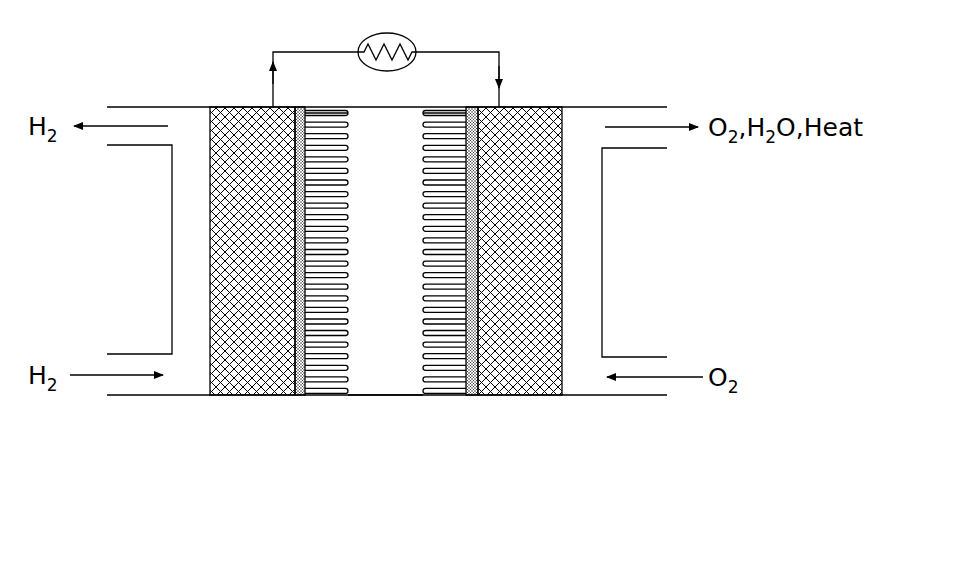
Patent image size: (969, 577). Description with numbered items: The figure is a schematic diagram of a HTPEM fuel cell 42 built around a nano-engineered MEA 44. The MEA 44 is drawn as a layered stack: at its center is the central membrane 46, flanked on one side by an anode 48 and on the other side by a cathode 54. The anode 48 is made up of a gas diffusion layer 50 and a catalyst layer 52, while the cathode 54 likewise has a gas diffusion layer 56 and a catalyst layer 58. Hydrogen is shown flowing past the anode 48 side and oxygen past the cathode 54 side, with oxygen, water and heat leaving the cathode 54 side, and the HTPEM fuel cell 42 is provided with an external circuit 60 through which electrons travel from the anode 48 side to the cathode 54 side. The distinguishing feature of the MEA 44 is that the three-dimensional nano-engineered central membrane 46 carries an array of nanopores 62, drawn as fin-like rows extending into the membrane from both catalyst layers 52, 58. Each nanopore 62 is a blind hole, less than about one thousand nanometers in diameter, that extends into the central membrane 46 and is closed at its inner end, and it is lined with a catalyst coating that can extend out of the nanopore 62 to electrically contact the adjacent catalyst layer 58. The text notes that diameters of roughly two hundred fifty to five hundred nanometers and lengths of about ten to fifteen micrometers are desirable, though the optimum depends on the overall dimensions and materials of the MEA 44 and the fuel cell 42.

The HTPEM fuel cell 42 is at (541, 63).
The nano-engineered MEA 44 is at (562, 418).
The central membrane 46 is at (387, 400).
The anode 48 is at (305, 400).
The gas diffusion layer 50 is at (248, 106).
The catalyst layer 52 is at (300, 106).
The cathode 54 is at (562, 400).
The gas diffusion layer 56 is at (520, 106).
The catalyst layer 58 is at (474, 106).
The external circuit 60 is at (388, 33).
The nanopores 62 is at (420, 260).